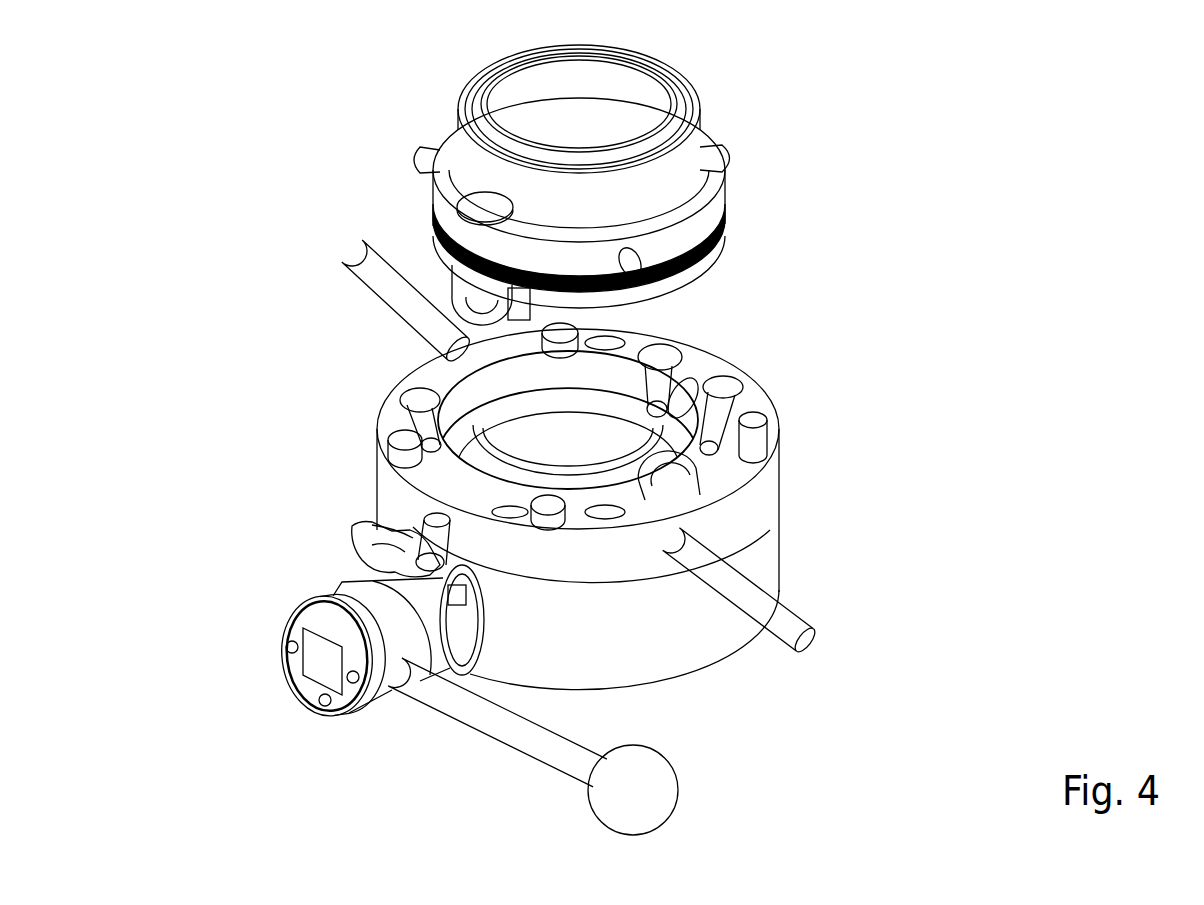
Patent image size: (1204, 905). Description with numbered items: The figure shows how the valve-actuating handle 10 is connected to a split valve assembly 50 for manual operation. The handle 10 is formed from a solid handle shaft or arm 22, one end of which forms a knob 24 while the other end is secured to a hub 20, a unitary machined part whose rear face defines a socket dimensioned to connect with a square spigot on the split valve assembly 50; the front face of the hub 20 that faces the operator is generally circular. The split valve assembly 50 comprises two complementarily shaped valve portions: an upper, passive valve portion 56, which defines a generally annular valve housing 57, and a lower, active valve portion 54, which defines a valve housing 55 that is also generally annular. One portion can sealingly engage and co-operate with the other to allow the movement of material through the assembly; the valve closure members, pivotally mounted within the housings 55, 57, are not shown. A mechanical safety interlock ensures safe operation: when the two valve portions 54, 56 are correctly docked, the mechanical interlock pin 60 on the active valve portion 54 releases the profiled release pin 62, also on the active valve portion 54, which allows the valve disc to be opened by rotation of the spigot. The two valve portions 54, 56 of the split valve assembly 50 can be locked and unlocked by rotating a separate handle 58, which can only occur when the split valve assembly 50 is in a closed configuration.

The valve-actuating handle 10 is at (470, 652).
The hub 20 is at (345, 585).
The handle shaft or arm 22 is at (452, 703).
The knob 24 is at (662, 790).
The split valve assembly 50 is at (669, 451).
The active valve portion 54 is at (780, 530).
The valve housing 55 is at (705, 620).
The passive valve portion 56 is at (671, 185).
The valve housing 57 is at (642, 190).
The handle 58 is at (355, 252).
The mechanical interlock pin 60 is at (423, 537).
The profiled release pin 62 is at (372, 548).